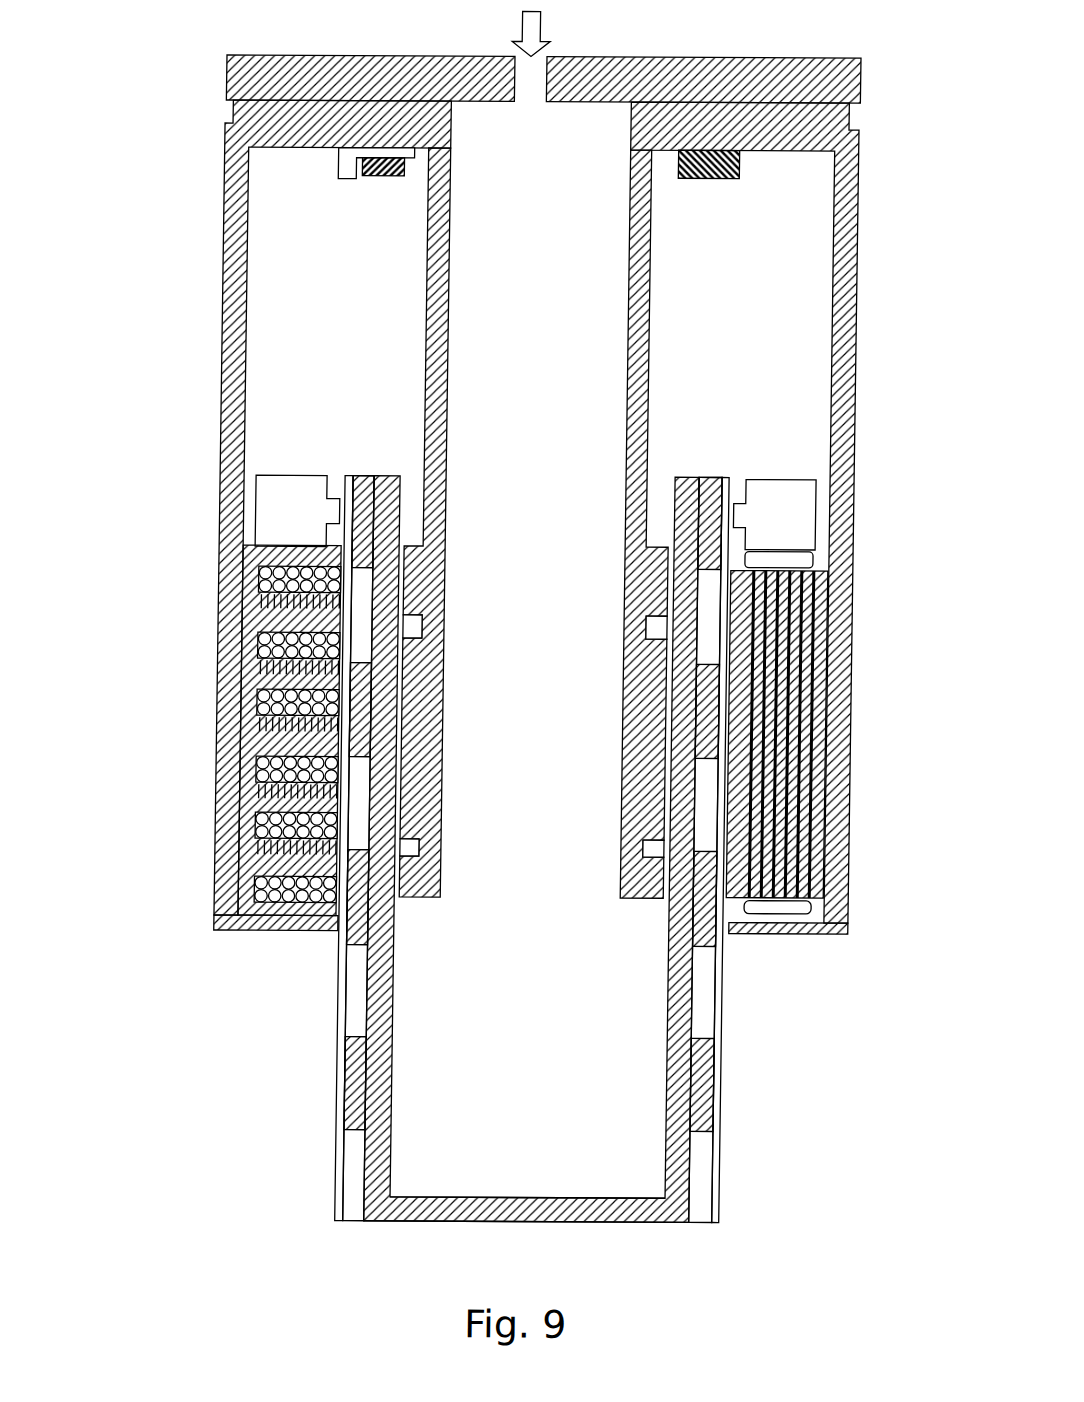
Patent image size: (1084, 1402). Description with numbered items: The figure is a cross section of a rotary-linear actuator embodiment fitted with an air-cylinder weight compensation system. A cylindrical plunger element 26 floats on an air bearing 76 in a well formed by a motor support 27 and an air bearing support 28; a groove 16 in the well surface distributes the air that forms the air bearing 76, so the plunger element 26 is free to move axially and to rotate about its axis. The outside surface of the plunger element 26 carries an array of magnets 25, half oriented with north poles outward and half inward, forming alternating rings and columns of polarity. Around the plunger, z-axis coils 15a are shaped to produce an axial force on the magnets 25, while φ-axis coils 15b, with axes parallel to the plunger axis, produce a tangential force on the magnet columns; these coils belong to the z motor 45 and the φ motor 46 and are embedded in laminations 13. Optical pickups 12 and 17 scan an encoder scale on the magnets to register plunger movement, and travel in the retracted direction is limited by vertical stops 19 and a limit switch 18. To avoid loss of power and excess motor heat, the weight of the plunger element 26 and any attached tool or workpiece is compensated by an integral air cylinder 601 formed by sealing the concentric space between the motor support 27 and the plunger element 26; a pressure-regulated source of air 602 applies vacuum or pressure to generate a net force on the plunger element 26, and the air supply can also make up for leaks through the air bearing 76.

The integral air cylinder 601 is at (503, 446).
The pressure-regulated source of air 602 is at (548, 18).
The optical pickup 12 is at (333, 475).
The laminations 13 is at (250, 913).
The z-axis coils 15a is at (264, 889).
The φ-axis coils 15b is at (821, 722).
The groove 16 is at (653, 845).
The optical pickup 17 is at (752, 477).
The limit switch 18 is at (341, 150).
The vertical stops 19 is at (406, 168).
The magnets 25 is at (374, 1242).
The plunger element 26 is at (646, 1221).
The motor support 27 is at (836, 240).
The air bearing support 28 is at (452, 232).
The z motor 45 is at (328, 917).
The φ motor 46 is at (820, 918).
The air bearing 76 is at (673, 591).